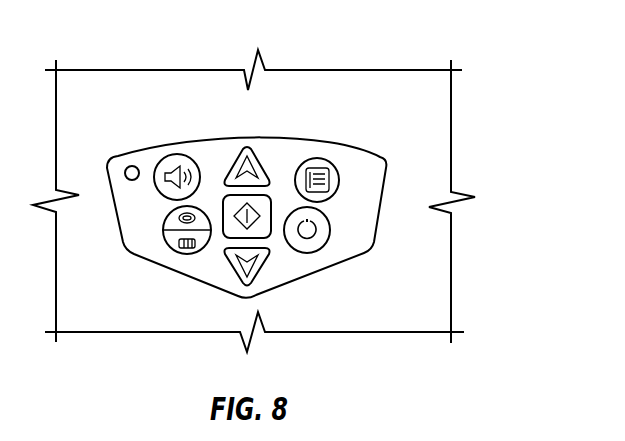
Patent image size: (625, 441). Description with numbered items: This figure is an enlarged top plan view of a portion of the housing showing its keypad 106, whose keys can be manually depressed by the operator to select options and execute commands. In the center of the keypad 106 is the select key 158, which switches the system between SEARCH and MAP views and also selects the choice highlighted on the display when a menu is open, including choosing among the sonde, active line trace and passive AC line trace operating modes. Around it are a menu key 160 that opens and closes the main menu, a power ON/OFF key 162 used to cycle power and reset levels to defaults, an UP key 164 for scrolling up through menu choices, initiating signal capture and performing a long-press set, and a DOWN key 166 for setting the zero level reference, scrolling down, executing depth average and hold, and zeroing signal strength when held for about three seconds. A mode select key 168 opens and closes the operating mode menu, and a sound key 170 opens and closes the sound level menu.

The keypad 106 is at (411, 53).
The select key 158 is at (271, 200).
The menu key 160 is at (317, 158).
The power ON/OFF key 162 is at (330, 243).
The UP key 164 is at (247, 148).
The DOWN key 166 is at (258, 277).
The mode select key 168 is at (187, 254).
The sound key 170 is at (161, 159).